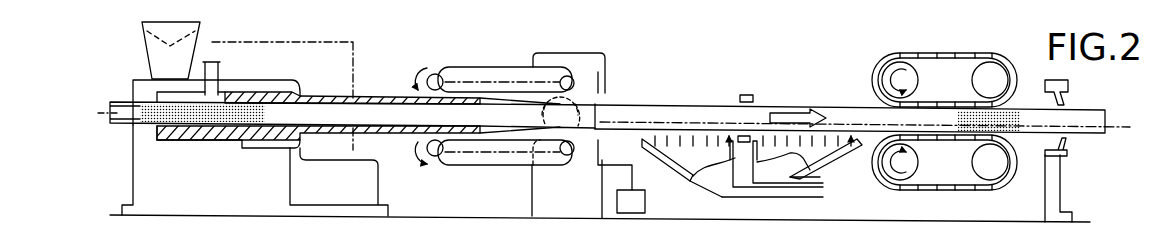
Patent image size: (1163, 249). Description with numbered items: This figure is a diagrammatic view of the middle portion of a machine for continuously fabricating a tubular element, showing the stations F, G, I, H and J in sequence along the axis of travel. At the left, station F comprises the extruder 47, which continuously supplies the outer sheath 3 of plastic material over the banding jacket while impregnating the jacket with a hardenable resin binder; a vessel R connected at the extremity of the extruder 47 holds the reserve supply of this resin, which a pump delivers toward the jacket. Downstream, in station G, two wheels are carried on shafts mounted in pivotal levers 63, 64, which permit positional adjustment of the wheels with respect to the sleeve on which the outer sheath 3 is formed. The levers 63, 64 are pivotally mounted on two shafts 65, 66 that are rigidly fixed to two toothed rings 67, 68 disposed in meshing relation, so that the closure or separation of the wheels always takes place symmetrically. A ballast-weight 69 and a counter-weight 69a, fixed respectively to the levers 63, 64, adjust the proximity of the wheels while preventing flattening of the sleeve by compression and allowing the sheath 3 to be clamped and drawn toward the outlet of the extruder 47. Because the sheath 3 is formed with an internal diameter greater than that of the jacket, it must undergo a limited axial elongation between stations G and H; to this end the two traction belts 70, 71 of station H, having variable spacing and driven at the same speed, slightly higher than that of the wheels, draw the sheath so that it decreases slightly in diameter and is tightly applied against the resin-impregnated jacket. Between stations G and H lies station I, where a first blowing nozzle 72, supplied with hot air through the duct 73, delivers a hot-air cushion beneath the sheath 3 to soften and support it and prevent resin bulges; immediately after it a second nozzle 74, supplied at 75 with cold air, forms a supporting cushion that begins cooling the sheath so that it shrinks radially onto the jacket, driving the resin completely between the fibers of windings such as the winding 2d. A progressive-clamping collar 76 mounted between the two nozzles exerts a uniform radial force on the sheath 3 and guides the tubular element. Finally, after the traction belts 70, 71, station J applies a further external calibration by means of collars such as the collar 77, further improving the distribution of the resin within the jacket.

The extruder 47 is at (192, 189).
The station F is at (199, 61).
The station G is at (417, 60).
The outer sheath 3 is at (325, 73).
The winding 2d is at (357, 97).
The vessel R is at (339, 182).
The pivotal lever 63 is at (490, 67).
The pivotal lever 64 is at (479, 170).
The shaft 65 is at (578, 62).
The shaft 66 is at (562, 155).
The toothed ring 67 is at (605, 93).
The toothed ring 68 is at (603, 152).
The ballast-weight 69 is at (457, 58).
The counter-weight 69a is at (648, 200).
The first blowing nozzle 72 is at (677, 150).
The duct 73 is at (828, 204).
The second nozzle 74 is at (783, 145).
The cold air supply 75 is at (826, 184).
The progressive-clamping collar 76 is at (738, 99).
The station I is at (756, 92).
The station H is at (866, 78).
The traction belt 70 is at (990, 72).
The traction belt 71 is at (995, 170).
The collar 77 is at (1069, 100).
The station J is at (1083, 145).